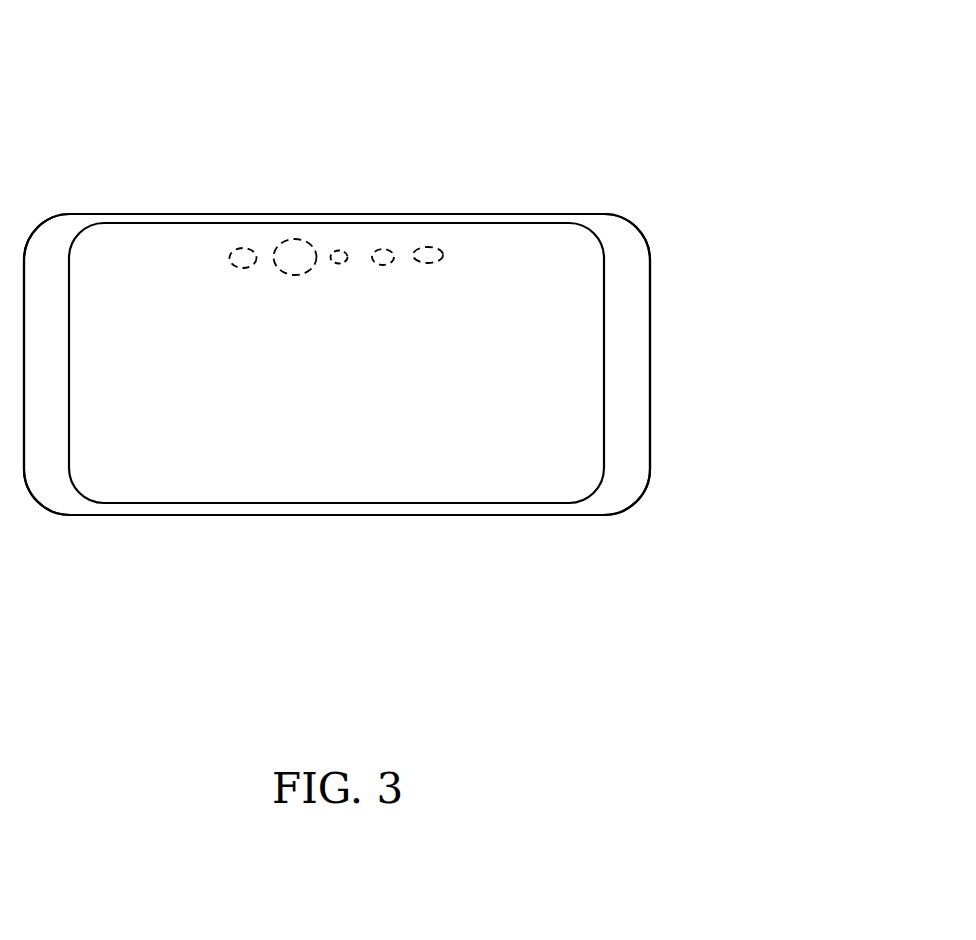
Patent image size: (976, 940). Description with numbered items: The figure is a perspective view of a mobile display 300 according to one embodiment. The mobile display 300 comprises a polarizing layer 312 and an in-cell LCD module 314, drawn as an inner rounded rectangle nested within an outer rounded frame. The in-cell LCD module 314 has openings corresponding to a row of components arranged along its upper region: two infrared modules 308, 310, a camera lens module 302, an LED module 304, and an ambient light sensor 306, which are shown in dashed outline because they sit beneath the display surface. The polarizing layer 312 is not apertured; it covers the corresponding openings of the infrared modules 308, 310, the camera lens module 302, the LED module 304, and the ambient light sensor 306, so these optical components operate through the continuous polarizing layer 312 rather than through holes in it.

The mobile display 300 is at (623, 31).
The camera lens module 302 is at (284, 243).
The LED module 304 is at (340, 252).
The ambient light sensor 306 is at (385, 250).
The infrared module 308 is at (435, 248).
The infrared module 310 is at (242, 248).
The polarizing layer 312 is at (594, 323).
The in-cell LCD module 314 is at (637, 461).